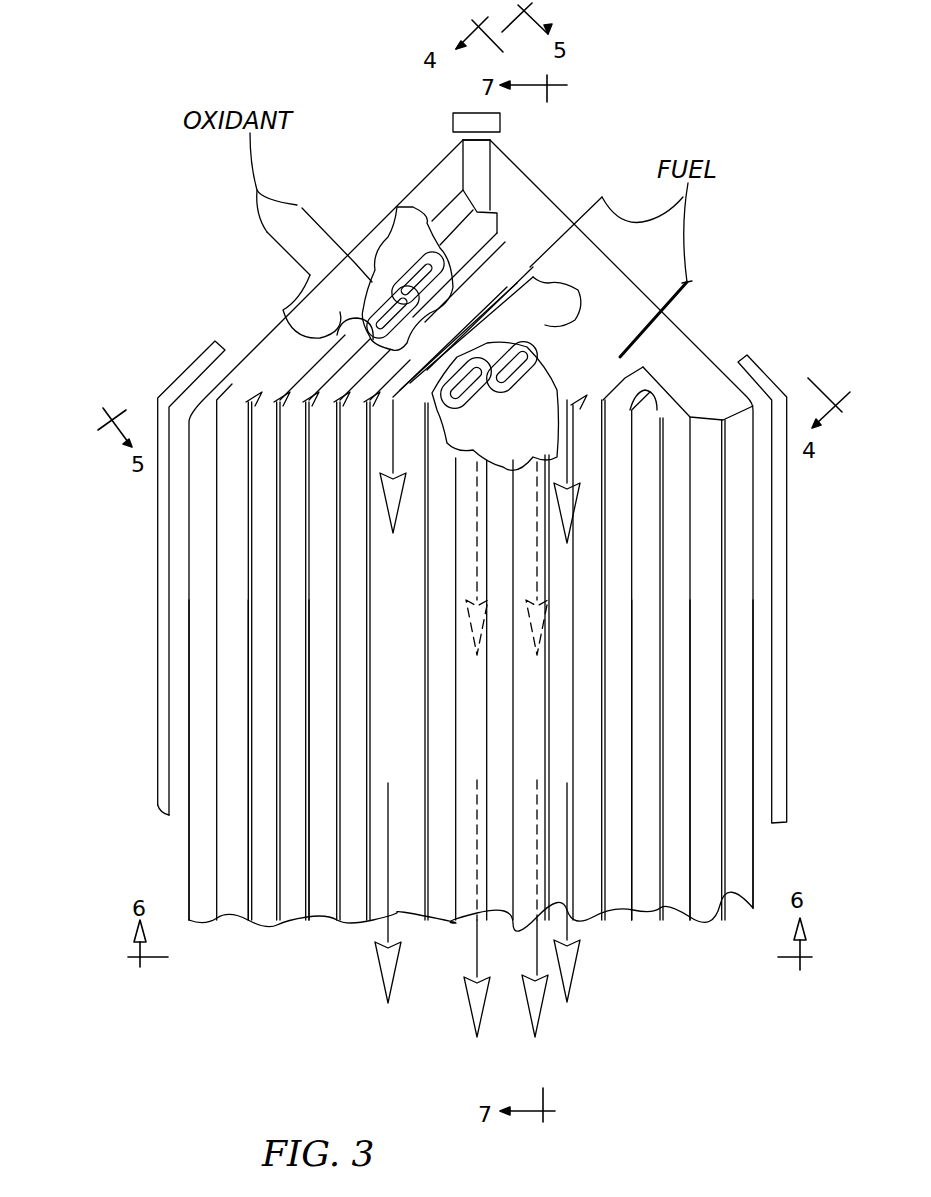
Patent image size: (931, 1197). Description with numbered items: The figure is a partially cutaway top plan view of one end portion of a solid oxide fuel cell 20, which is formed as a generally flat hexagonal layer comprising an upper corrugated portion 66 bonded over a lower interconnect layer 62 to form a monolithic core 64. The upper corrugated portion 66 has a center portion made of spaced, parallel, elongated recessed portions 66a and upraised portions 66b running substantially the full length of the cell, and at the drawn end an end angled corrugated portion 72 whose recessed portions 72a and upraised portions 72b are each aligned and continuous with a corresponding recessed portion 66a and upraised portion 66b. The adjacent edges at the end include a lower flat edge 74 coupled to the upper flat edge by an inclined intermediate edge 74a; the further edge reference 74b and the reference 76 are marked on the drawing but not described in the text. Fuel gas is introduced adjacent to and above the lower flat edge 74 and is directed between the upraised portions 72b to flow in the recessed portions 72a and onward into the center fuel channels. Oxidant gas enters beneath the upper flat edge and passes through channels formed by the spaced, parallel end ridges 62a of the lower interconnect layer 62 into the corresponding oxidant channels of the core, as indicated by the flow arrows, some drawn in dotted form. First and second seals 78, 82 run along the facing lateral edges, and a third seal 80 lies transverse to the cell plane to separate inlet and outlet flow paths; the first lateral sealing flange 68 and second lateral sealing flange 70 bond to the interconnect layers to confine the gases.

The solid oxide fuel cell 20 is at (690, 107).
The lower interconnect layer 62 is at (307, 312).
The end ridges 62a is at (368, 262).
The monolithic core 64 is at (711, 351).
The upper corrugated portion 66 is at (356, 928).
The recessed portions 66a is at (688, 923).
The upraised portions 66b is at (307, 923).
The first lateral sealing flange 68 is at (748, 836).
The second lateral sealing flange 70 is at (198, 818).
The end angled corrugated portion 72 is at (518, 204).
The recessed portions of end angled corrugated portion 72a is at (545, 291).
The upraised portions of end angled corrugated portion 72b is at (617, 356).
The lower flat edge 74 is at (557, 215).
The inclined intermediate edge 74a is at (478, 160).
The manifold plate inlet edge 74b is at (632, 372).
The oxidant manifold plate 76 is at (395, 222).
The first seal 78 is at (185, 371).
The third seal 80 is at (452, 121).
The second seal 82 is at (777, 380).